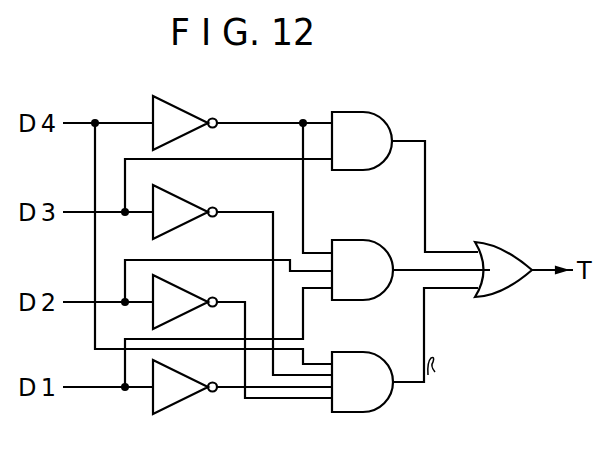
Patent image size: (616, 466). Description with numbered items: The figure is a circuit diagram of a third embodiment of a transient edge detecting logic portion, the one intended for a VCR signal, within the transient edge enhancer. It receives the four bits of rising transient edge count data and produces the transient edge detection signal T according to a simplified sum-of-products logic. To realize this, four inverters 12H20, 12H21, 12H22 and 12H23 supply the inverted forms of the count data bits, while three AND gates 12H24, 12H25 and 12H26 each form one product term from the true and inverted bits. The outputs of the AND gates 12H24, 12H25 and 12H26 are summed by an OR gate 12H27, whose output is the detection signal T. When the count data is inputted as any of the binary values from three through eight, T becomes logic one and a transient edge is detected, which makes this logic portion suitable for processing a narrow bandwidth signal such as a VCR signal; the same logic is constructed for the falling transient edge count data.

The inverter 12H20 is at (190, 113).
The inverter 12H21 is at (190, 203).
The inverter 12H22 is at (179, 272).
The inverter 12H23 is at (153, 400).
The AND gate 12H24 is at (361, 92).
The AND gate 12H25 is at (341, 240).
The AND gate 12H26 is at (344, 331).
The OR gate 12H27 is at (486, 245).